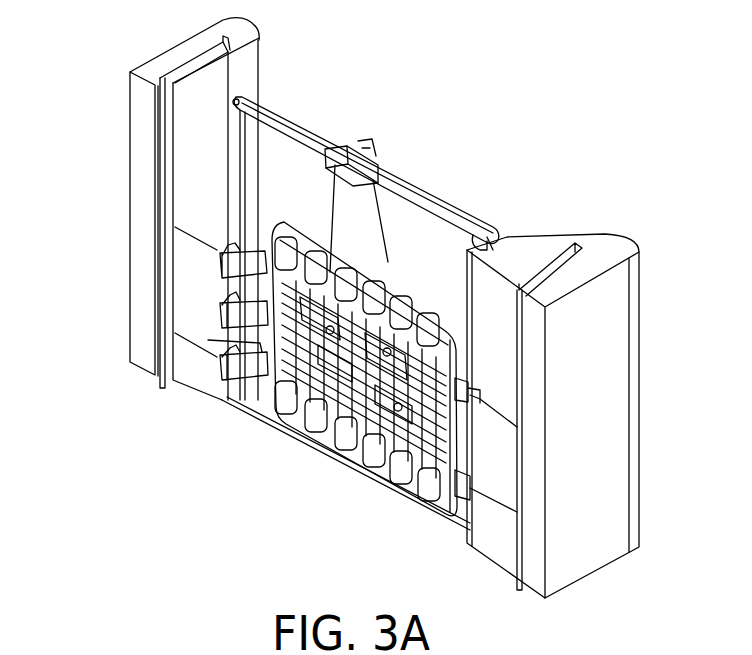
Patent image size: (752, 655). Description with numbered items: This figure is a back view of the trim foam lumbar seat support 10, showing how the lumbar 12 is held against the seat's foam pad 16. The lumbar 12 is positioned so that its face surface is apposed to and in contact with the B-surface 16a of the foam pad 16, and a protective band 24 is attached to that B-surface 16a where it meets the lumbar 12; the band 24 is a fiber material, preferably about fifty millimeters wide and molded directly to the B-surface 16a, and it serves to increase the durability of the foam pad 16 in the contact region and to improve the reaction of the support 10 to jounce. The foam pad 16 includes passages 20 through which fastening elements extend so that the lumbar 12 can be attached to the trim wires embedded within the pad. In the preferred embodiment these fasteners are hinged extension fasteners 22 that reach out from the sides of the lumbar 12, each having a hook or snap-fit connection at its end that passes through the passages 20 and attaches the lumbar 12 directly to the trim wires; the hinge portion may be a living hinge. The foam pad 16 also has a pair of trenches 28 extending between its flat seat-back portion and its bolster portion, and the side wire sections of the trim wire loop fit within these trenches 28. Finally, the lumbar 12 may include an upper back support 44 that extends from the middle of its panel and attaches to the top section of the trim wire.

The trim foam lumbar seat support 10 is at (562, 101).
The lumbar 12 is at (306, 446).
The foam pad 16 is at (573, 234).
The B-surface 16a is at (495, 368).
The passages 20 is at (233, 247).
The hinged extension fasteners 22 is at (253, 265).
The protective band 24 is at (193, 272).
The trenches 28 is at (250, 97).
The upper back support 44 is at (367, 228).